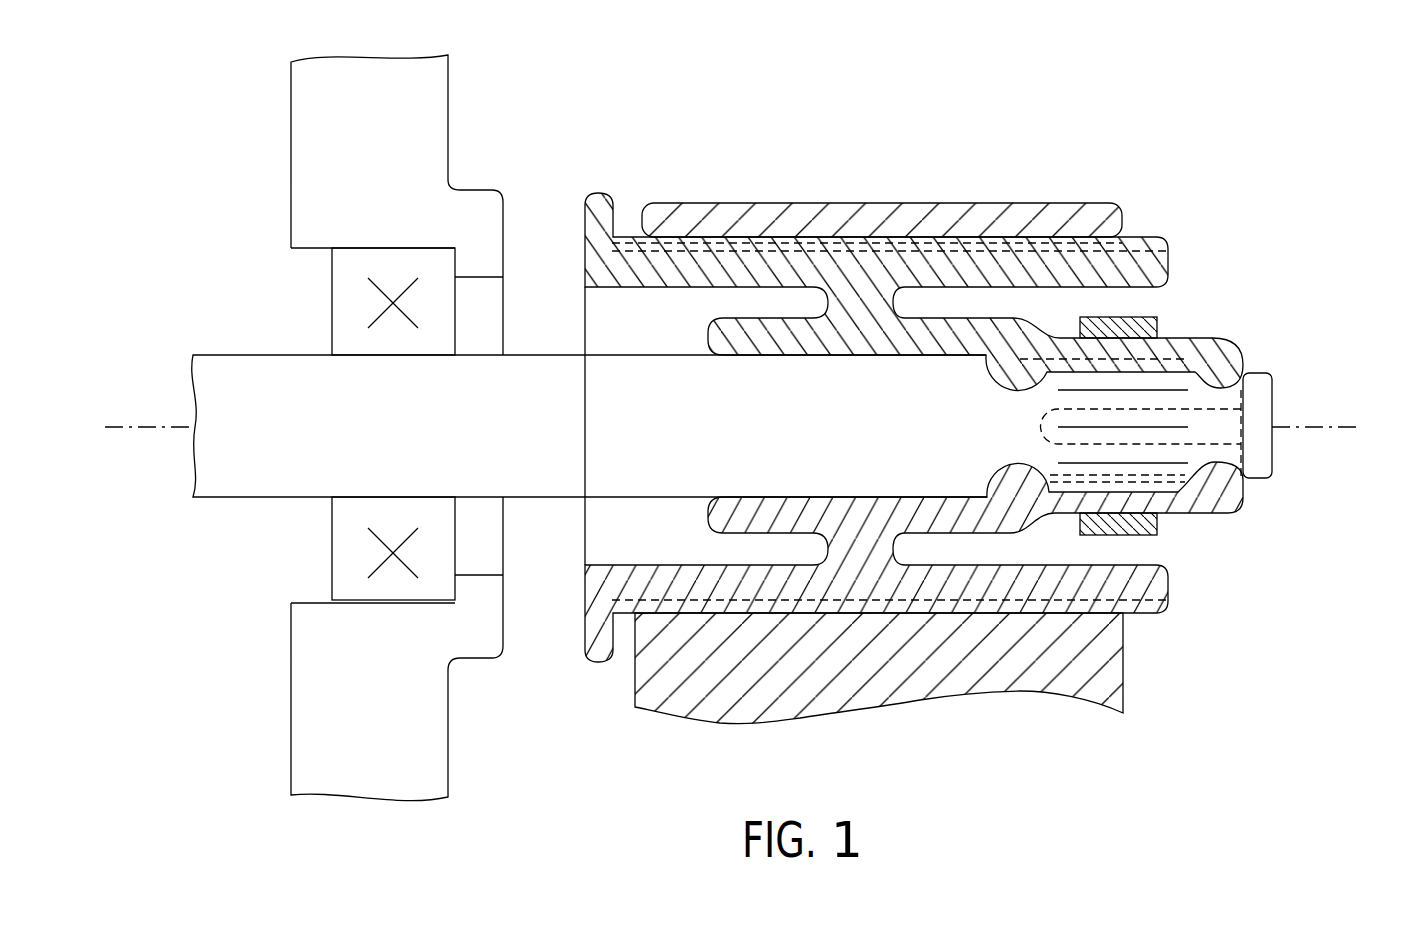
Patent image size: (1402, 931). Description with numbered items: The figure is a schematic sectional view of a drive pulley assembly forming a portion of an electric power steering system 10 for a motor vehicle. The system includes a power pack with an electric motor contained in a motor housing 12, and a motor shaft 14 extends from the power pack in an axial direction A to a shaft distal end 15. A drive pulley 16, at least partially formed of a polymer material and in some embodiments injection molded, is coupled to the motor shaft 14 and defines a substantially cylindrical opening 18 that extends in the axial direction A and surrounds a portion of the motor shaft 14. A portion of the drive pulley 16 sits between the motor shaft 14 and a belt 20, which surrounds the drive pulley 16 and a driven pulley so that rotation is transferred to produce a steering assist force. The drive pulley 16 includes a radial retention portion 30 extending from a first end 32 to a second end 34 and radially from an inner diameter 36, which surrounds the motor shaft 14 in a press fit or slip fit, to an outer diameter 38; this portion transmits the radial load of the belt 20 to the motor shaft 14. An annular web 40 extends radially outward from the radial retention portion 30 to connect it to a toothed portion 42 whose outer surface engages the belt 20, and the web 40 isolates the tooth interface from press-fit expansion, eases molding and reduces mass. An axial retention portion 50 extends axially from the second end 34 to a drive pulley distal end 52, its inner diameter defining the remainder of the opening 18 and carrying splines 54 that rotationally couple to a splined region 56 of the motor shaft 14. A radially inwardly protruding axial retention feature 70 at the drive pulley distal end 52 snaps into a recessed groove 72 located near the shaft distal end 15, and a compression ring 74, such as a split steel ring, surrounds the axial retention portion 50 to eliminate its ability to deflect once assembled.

The electric power steering (EPS) system 10 is at (1104, 92).
The motor housing 12 is at (325, 135).
The motor shaft 14 is at (258, 393).
The shaft distal end 15 is at (1272, 453).
The drive pulley 16 is at (596, 186).
The cylindrical opening 18 is at (682, 524).
The belt 20 is at (752, 218).
The radial retention portion 30 is at (800, 518).
The first end 32 is at (708, 348).
The second end 34 is at (988, 370).
The inner diameter 36 is at (740, 497).
The outer diameter 38 is at (942, 318).
The annular web 40 is at (857, 565).
The toothed portion 42 is at (708, 262).
The axial retention portion 50 is at (1158, 350).
The drive pulley distal end 52 is at (1240, 367).
The splines 54 is at (1145, 513).
The splined region 56 is at (1178, 482).
The axial retention feature 70 is at (1222, 360).
The recessed groove 72 is at (1218, 470).
The compression ring 74 is at (1133, 553).
The axial direction A is at (1332, 418).